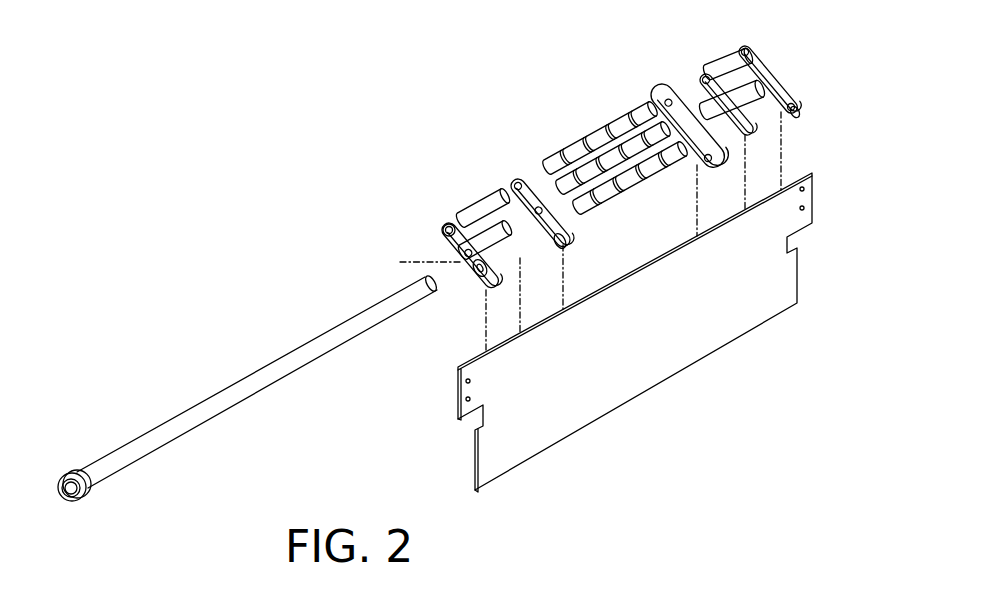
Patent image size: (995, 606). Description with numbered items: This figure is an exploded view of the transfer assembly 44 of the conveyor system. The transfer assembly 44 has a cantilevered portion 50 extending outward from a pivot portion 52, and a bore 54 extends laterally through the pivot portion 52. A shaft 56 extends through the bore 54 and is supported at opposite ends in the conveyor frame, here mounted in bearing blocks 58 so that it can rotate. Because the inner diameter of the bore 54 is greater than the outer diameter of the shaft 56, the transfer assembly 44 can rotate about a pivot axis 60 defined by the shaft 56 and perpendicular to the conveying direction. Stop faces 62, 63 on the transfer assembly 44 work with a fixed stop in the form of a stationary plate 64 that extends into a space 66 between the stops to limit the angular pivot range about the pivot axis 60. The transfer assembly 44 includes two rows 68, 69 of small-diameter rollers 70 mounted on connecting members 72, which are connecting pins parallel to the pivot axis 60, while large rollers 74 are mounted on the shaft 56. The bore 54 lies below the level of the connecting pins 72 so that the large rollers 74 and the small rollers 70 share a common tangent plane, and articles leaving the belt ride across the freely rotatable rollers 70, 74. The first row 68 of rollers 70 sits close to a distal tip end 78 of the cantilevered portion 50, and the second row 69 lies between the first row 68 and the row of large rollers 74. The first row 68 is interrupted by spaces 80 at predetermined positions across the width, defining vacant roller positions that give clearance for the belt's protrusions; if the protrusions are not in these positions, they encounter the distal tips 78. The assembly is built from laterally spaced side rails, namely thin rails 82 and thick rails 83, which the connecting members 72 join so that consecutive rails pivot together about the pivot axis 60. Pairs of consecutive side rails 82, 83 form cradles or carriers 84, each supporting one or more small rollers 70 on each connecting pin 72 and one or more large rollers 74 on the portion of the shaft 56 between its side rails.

The transfer assembly 44 is at (428, 118).
The cantilevered portion 50 is at (446, 233).
The pivot portion 52 is at (795, 104).
The bore 54 is at (470, 278).
The shaft 56 is at (130, 458).
The bearing blocks 58 is at (62, 476).
The pivot axis 60 is at (395, 261).
The stop face 62 is at (556, 243).
The stop face 63 is at (705, 165).
The stationary plate 64 is at (610, 387).
The space 66 is at (736, 156).
The first row 68 is at (766, 45).
The second row 69 is at (783, 63).
The small-diameter rollers 70 is at (642, 112).
The connecting members 72 is at (540, 165).
The large rollers 74 is at (600, 200).
The distal tip end 78 is at (483, 202).
The spaces 80 is at (500, 195).
The thin rails 82 is at (798, 112).
The thick rails 83 is at (579, 233).
The carriers 84 is at (716, 68).